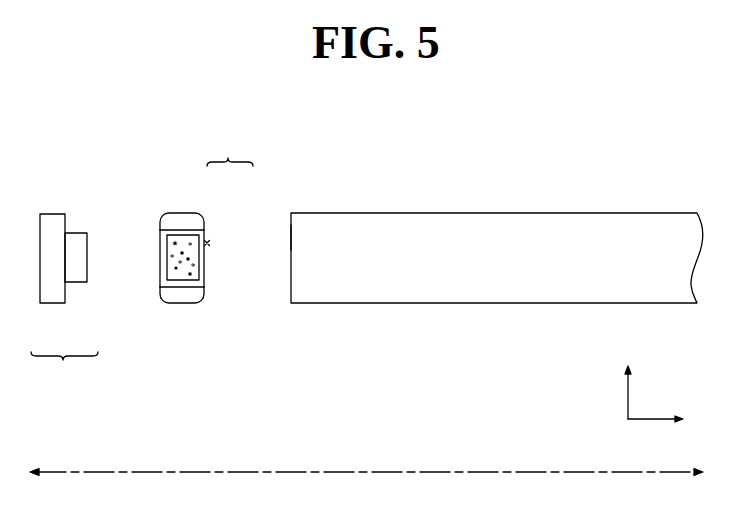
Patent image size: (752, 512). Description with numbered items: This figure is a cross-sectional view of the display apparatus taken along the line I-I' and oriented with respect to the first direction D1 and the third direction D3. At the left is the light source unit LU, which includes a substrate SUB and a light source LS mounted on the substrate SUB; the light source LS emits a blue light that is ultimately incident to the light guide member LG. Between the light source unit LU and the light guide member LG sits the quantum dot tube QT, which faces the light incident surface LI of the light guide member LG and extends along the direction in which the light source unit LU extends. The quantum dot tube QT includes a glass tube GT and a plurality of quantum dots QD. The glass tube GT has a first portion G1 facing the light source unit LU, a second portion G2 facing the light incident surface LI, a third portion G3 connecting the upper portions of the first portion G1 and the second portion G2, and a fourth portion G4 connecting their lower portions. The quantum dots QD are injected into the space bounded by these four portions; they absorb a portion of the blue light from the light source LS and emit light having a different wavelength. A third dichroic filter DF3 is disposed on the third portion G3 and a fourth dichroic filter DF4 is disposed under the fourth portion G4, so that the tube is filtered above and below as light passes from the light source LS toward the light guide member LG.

The substrate SUB is at (54, 300).
The light source LS is at (79, 283).
The light source unit LU is at (64, 366).
The third dichroic filter DF3 is at (177, 228).
The fourth dichroic filter DF4 is at (163, 298).
The first portion G1 is at (160, 255).
The second portion G2 is at (204, 255).
The third portion G3 is at (181, 217).
The fourth portion G4 is at (183, 299).
The quantum dots QD is at (186, 229).
The glass tube GT is at (208, 243).
The quantum dot tube QT is at (228, 158).
The light guide member LG is at (477, 213).
The light incident surface LI is at (291, 236).
The first direction D1 is at (628, 383).
The third direction D3 is at (666, 420).
The line I-I' I is at (366, 472).